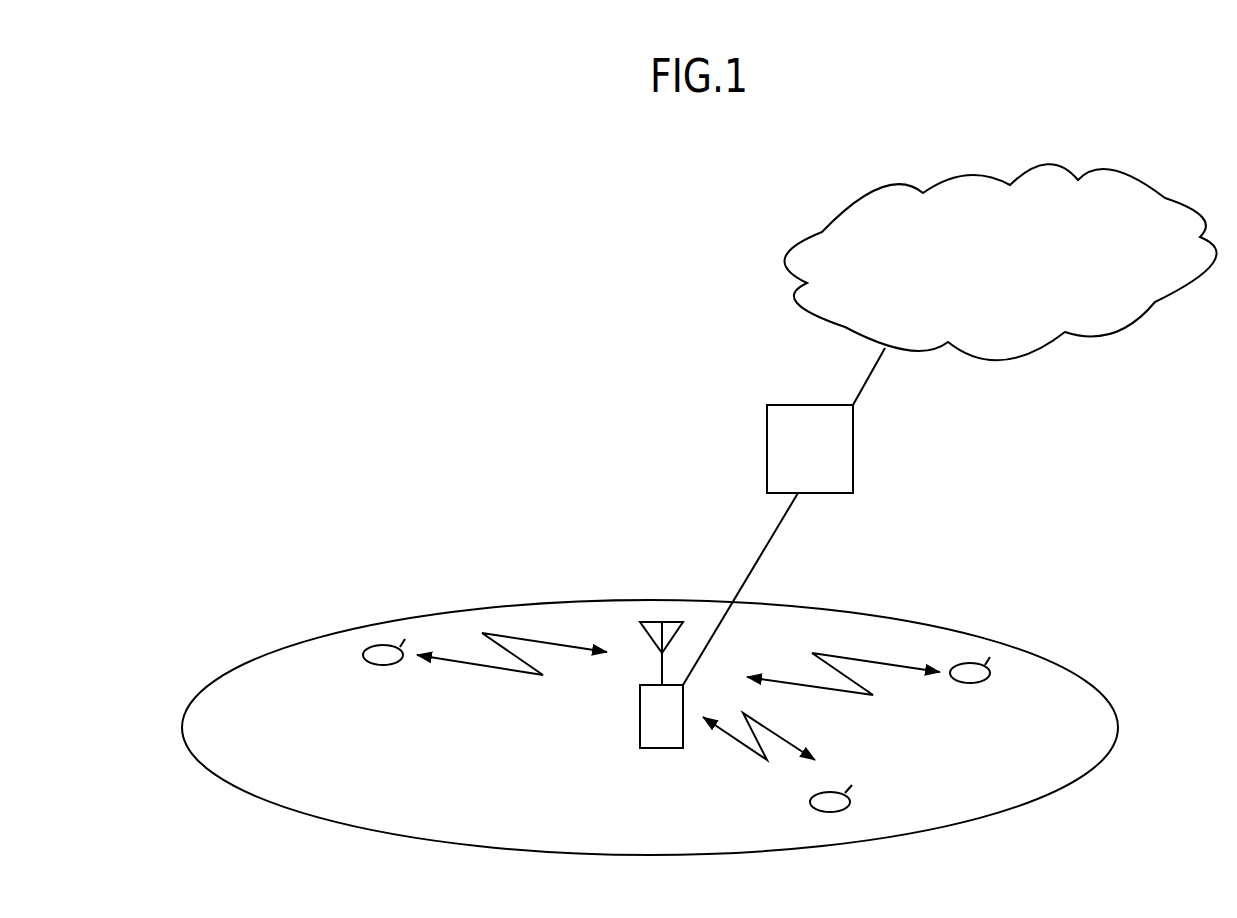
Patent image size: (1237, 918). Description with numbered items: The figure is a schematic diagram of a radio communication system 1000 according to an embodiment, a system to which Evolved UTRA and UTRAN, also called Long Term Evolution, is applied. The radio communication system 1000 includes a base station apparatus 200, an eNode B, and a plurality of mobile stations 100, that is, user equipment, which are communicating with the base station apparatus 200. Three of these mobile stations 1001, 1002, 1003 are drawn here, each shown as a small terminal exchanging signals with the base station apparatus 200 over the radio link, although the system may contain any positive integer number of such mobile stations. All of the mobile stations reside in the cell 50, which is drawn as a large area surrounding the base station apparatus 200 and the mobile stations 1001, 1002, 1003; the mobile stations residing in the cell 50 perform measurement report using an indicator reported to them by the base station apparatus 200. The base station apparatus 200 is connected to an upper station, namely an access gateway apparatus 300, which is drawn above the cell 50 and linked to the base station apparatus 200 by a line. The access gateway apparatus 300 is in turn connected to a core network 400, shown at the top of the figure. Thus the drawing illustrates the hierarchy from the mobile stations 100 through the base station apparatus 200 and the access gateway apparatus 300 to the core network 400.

The radio communication system 1000 is at (382, 219).
The cell 50 is at (947, 828).
The mobile stations 100 is at (713, 730).
The mobile station 1001 is at (383, 667).
The mobile station 1002 is at (812, 802).
The mobile station 1003 is at (970, 683).
The base station apparatus 200 is at (640, 725).
The access gateway apparatus 300 is at (853, 445).
The core network 400 is at (1050, 170).